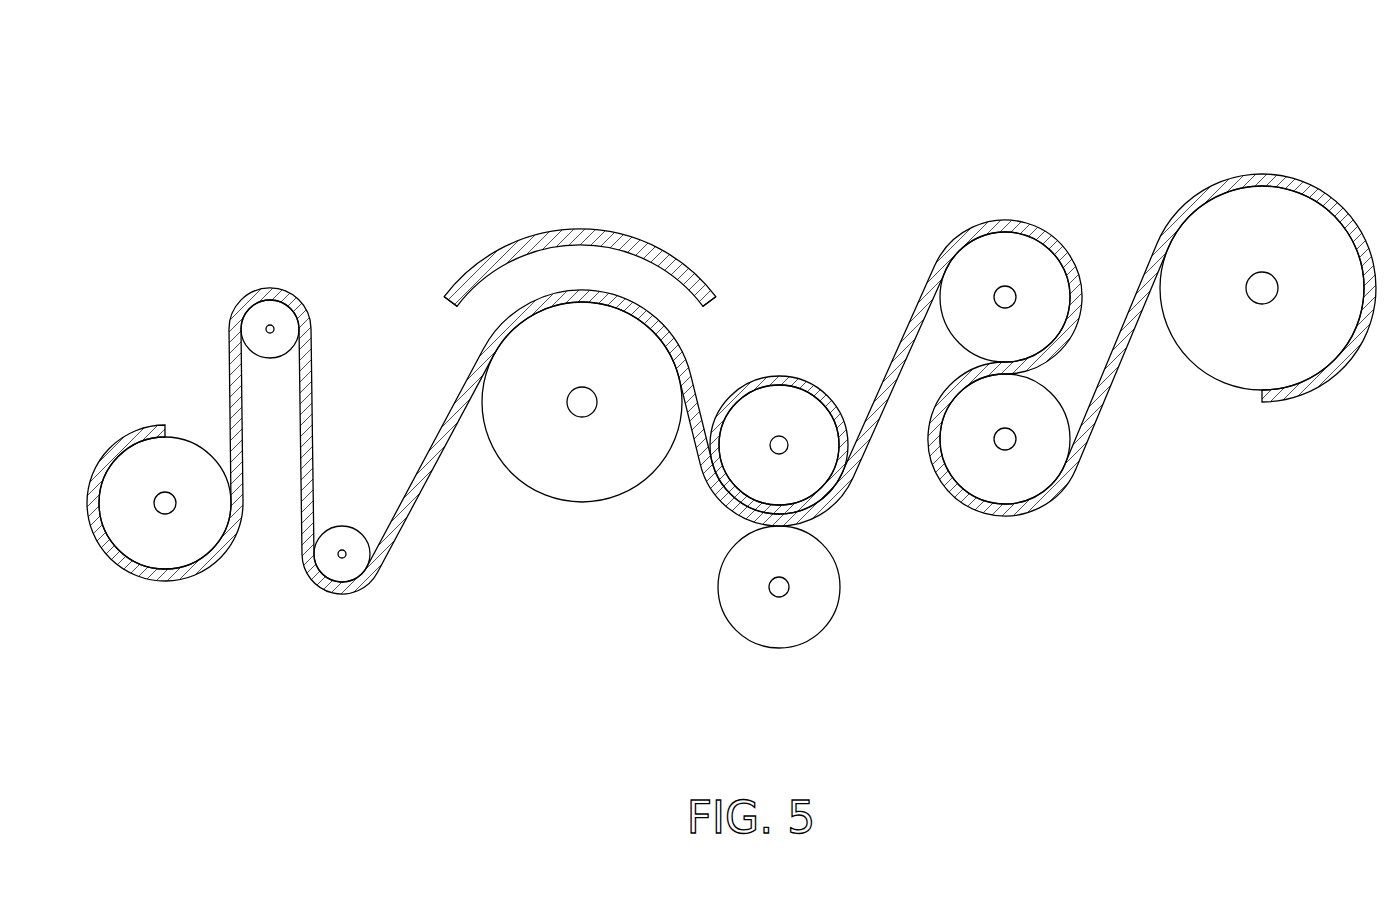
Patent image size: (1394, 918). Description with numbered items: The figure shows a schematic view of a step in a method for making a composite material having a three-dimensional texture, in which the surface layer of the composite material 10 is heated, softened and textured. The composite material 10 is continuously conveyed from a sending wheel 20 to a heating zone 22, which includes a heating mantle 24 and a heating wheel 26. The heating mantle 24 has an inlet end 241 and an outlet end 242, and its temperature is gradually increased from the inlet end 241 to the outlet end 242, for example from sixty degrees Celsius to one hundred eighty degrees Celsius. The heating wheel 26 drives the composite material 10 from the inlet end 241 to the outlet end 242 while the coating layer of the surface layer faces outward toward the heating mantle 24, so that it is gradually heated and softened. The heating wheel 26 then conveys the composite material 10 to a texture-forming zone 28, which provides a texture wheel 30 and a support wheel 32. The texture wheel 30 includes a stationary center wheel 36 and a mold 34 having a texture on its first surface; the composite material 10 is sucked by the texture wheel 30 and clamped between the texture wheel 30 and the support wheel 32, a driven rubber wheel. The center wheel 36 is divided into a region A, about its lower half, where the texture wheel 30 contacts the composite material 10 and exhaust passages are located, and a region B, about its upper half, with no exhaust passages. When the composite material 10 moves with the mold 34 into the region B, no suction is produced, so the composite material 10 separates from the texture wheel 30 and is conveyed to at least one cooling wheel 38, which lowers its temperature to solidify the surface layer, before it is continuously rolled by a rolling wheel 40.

The composite material 10 is at (155, 433).
The sending wheel 20 is at (162, 553).
The heating zone 22 is at (660, 112).
The heating mantle 24 is at (573, 237).
The inlet end 241 is at (453, 297).
The outlet end 242 is at (712, 287).
The heating wheel 26 is at (585, 482).
The texture-forming zone 28 is at (893, 619).
The texture wheel 30 is at (742, 283).
The support wheel 32 is at (777, 630).
The mold 34 is at (772, 377).
The center wheel 36 is at (803, 400).
The cooling wheel 38 is at (1005, 247).
The rolling wheel 40 is at (1278, 363).
The region A is at (765, 478).
The region B is at (818, 420).